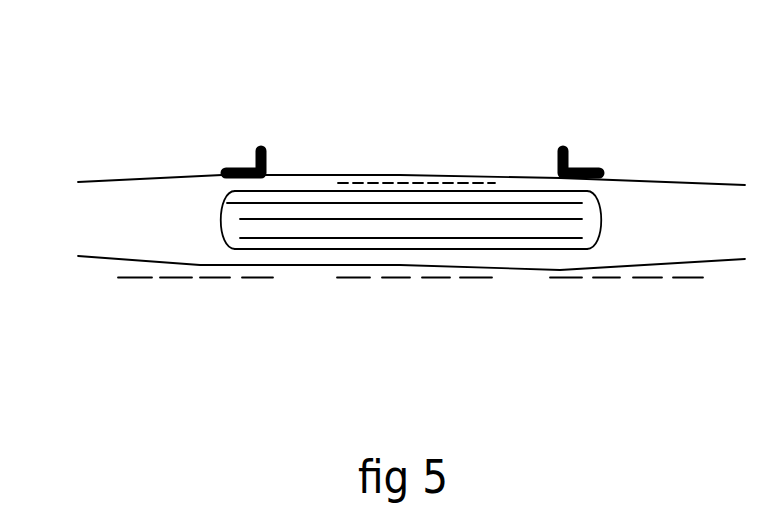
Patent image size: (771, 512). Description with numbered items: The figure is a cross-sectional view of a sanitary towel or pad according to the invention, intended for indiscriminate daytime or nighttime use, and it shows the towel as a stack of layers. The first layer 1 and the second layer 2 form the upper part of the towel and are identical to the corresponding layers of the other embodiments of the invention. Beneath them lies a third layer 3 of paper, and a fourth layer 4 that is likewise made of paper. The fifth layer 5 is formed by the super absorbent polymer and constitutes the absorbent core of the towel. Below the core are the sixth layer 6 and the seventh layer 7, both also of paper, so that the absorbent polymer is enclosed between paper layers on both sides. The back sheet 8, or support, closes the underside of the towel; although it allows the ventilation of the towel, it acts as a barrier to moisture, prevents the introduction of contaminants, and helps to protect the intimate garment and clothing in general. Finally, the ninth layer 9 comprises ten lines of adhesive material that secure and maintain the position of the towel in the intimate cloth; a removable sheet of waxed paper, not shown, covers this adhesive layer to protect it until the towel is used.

The first layer 1 is at (500, 175).
The second layer 2 is at (375, 183).
The third layer 3 is at (585, 193).
The fourth layer 4 is at (227, 203).
The fifth layer 5 is at (578, 223).
The sixth layer 6 is at (240, 238).
The seventh layer 7 is at (585, 248).
The back sheet 8 is at (500, 267).
The ninth layer 9 is at (410, 347).